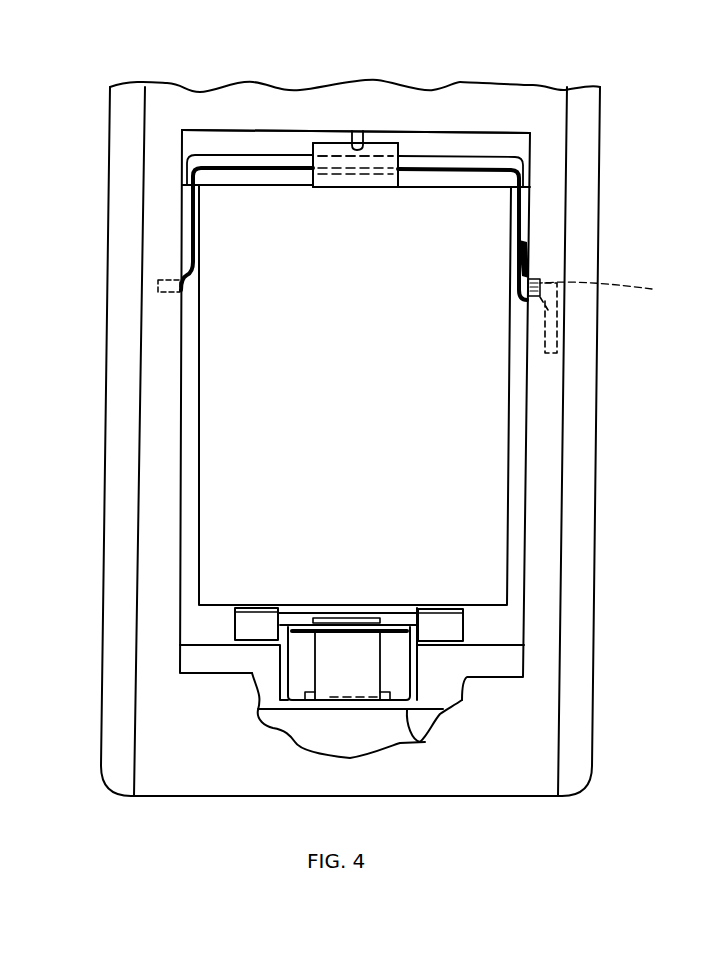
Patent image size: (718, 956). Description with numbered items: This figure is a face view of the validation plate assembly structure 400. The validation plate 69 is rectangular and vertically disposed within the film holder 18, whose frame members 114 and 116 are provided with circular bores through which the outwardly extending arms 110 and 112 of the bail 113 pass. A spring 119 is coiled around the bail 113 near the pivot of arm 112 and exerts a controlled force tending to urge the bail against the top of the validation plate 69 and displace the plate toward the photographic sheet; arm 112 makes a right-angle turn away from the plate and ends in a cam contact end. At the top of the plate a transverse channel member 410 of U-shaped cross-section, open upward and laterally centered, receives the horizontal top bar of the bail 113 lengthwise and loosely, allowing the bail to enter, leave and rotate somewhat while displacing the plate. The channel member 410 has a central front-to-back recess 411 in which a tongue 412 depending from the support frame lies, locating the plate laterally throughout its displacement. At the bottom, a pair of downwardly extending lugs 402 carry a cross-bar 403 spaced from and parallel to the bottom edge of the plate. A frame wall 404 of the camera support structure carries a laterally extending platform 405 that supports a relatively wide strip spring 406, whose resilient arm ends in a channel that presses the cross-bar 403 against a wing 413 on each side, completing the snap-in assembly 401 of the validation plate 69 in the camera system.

The film holder 18 is at (108, 254).
The validation plate 69 is at (507, 322).
The outwardly extending arm 110 is at (158, 286).
The outwardly extending arm 112 is at (608, 290).
The bail 113 is at (490, 162).
The frame member 114 is at (148, 403).
The frame member 116 is at (542, 373).
The spring 119 is at (523, 245).
The top contact assembly 400 is at (300, 140).
The snap-in assembly 401 is at (364, 598).
The lug 402 is at (258, 617).
The cross-bar 403 is at (303, 620).
The frame wall 404 is at (495, 658).
The platform 405 is at (425, 742).
The strip spring 406 is at (326, 693).
The channel member 410 is at (400, 163).
The recess 411 is at (340, 150).
The tongue 412 is at (352, 150).
The wing 413 is at (417, 683).